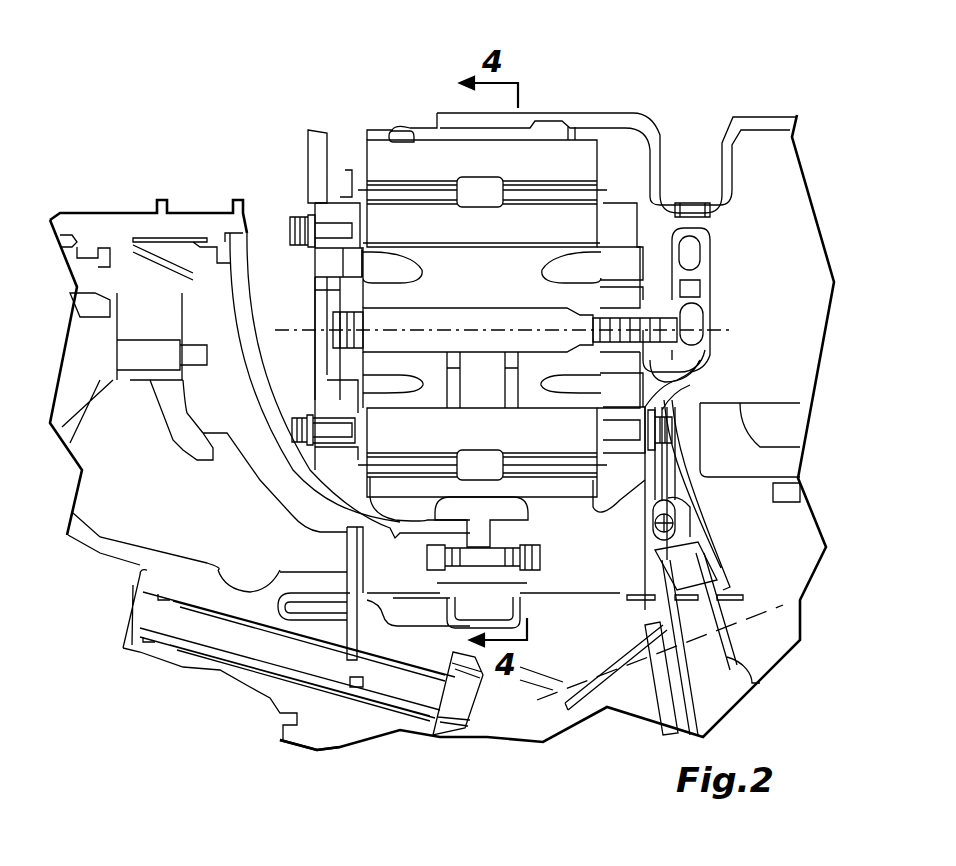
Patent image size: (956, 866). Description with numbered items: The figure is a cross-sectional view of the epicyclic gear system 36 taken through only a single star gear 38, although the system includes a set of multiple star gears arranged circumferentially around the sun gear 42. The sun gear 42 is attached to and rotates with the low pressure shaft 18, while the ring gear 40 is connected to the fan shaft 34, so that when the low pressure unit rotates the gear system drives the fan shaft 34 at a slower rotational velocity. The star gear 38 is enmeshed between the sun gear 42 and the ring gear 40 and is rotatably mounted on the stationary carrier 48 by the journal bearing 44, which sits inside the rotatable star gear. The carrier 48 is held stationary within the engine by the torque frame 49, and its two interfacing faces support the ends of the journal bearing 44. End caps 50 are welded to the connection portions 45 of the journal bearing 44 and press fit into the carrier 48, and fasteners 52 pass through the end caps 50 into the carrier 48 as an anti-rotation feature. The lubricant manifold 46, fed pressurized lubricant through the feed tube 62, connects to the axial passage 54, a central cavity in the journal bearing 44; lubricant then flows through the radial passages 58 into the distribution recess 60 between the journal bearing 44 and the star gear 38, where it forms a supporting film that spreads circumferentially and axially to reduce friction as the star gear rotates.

The low pressure shaft 18 is at (757, 117).
The fan shaft 34 is at (230, 227).
The epicyclic gear system 36 is at (350, 115).
The star gear 38 is at (540, 237).
The ring gear 40 is at (543, 500).
The sun gear 42 is at (393, 165).
The journal bearing 44 is at (492, 297).
The connection portion 45 is at (340, 292).
The lubricant manifold 46 is at (722, 302).
The carrier 48 is at (340, 215).
The torque frame 49 is at (740, 420).
The end cap 50 is at (338, 262).
The fastener 52 is at (295, 222).
The axial passage 54 is at (392, 318).
The radial passage 58 is at (452, 393).
The distribution recess 60 is at (510, 392).
The feed tube 62 is at (757, 683).